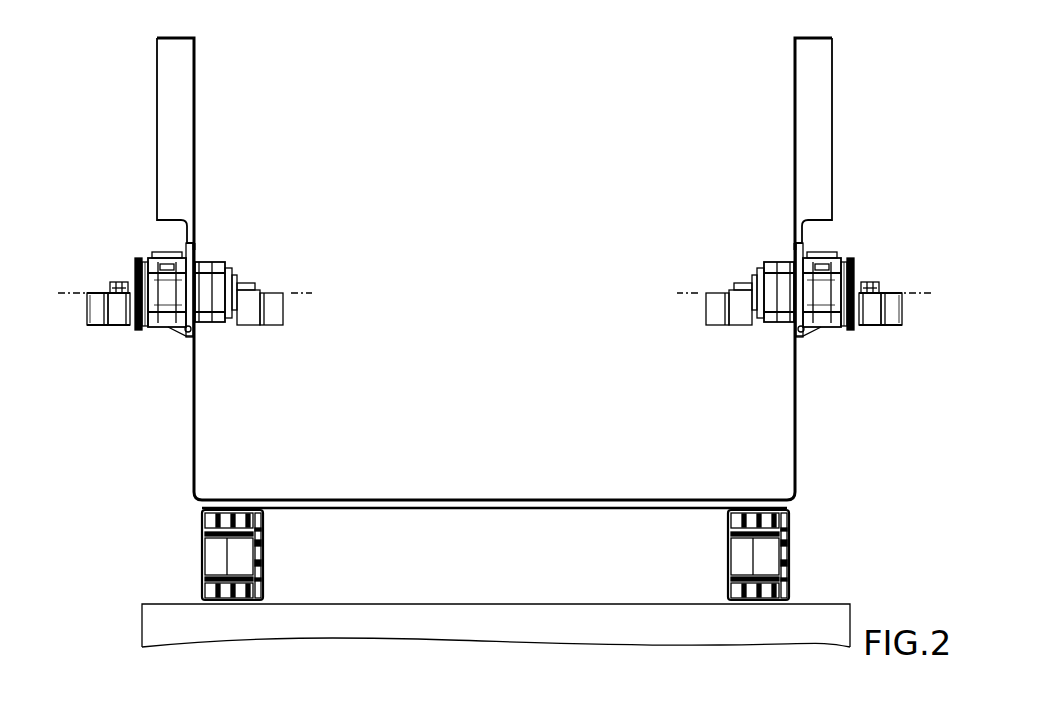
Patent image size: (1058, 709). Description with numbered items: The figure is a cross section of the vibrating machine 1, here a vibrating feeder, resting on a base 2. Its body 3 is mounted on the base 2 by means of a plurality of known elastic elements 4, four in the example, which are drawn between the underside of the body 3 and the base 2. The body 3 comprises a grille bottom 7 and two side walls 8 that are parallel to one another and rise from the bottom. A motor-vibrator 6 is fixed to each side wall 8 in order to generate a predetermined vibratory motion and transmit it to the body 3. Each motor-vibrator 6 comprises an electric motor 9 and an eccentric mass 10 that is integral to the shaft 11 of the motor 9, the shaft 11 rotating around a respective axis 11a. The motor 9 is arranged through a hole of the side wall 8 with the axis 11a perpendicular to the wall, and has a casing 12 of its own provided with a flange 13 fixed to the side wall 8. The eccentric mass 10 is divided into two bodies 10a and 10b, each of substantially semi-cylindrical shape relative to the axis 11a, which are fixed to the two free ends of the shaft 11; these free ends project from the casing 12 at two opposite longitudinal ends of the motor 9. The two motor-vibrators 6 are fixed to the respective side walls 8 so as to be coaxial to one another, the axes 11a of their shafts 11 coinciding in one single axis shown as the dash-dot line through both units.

The vibrating machine 1 is at (881, 86).
The base 2 is at (842, 622).
The body 3 is at (808, 490).
The elastic elements 4 is at (211, 563).
The motor-vibrator 6 is at (251, 219).
The grille bottom 7 is at (470, 503).
The side wall 8 is at (191, 428).
The electric motor 9 is at (207, 249).
The eccentric mass 10 is at (94, 272).
The body of the eccentric mass 10a is at (97, 320).
The body of the eccentric mass 10b is at (268, 318).
The shaft 11 is at (120, 283).
The axis 11a is at (291, 288).
The casing 12 is at (203, 318).
The flange 13 is at (189, 331).